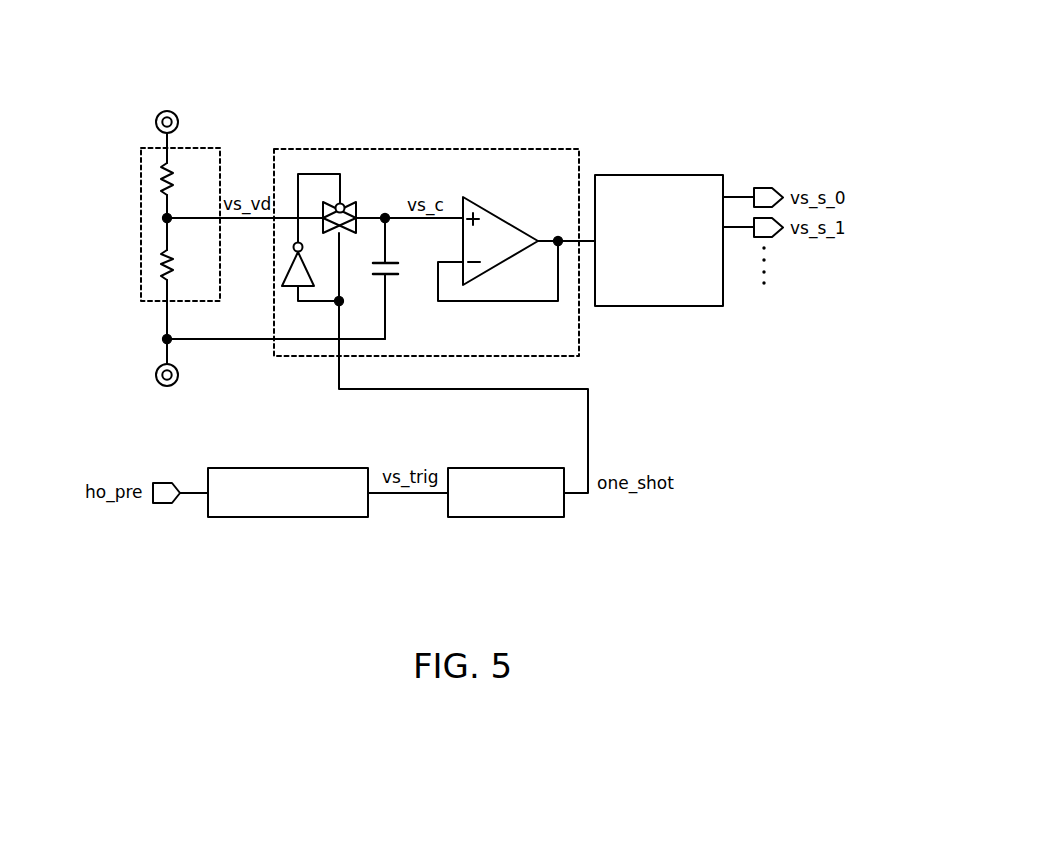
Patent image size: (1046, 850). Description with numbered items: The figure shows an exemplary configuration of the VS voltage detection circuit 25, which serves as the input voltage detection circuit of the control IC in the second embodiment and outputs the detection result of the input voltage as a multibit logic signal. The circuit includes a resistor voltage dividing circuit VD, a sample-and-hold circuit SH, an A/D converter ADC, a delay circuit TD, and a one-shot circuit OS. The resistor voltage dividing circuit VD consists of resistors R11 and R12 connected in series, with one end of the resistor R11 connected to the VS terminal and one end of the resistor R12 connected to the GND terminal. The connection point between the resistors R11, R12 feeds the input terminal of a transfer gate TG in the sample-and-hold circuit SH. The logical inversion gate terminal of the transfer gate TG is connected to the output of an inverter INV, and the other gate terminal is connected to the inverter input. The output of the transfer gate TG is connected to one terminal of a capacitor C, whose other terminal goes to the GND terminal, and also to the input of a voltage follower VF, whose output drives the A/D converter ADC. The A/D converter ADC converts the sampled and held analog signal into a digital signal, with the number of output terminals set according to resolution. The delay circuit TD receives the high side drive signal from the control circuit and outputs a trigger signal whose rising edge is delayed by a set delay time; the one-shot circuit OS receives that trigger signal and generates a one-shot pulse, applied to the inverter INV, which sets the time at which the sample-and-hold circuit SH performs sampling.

The VS voltage detection circuit 25 is at (567, 68).
The VS terminal VS is at (147, 124).
The GND terminal GND is at (144, 375).
The resistor voltage dividing circuit VD is at (206, 148).
The resistor R11 is at (191, 179).
The resistor R12 is at (191, 265).
The sample-and-hold circuit SH is at (419, 148).
The transfer gate TG is at (350, 202).
The inverter INV is at (292, 288).
The capacitor C is at (390, 282).
The voltage follower VF is at (515, 220).
The A/D converter ADC is at (652, 173).
The delay circuit TD is at (305, 467).
The one-shot circuit OS is at (503, 467).